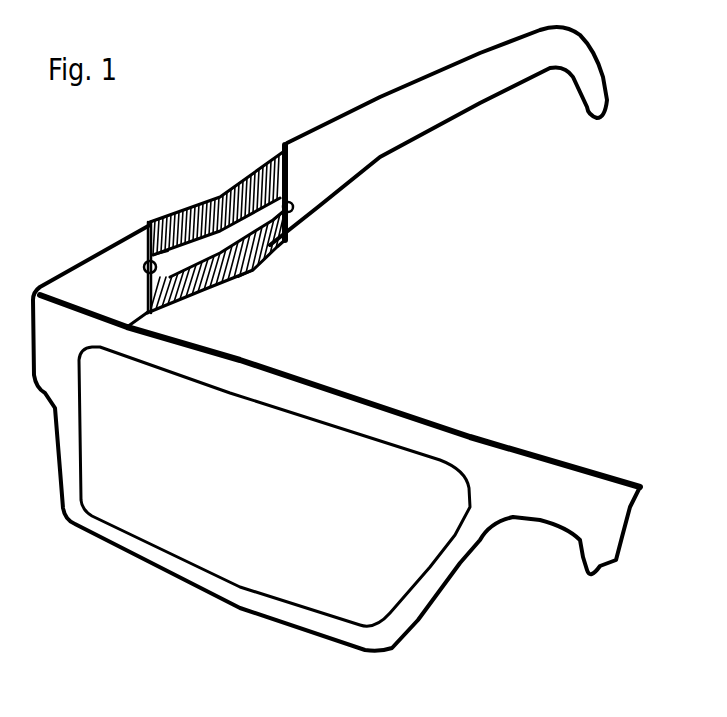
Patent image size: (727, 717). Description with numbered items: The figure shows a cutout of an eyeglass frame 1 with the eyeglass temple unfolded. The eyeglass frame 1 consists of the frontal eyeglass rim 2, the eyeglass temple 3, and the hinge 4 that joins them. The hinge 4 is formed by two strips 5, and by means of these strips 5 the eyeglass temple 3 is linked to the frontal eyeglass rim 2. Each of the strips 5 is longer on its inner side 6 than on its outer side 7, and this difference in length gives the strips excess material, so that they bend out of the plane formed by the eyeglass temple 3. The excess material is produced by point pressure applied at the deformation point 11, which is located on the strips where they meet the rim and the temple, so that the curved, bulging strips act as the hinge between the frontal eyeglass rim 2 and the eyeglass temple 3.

The eyeglass frame 1 is at (558, 310).
The frontal eyeglass rim 2 is at (365, 425).
The eyeglass temple 3 is at (445, 110).
The hinge 4 is at (217, 197).
The strips 5 is at (160, 220).
The inner side 6 is at (273, 247).
The outer side 7 is at (243, 192).
The deformation point 11 is at (140, 262).